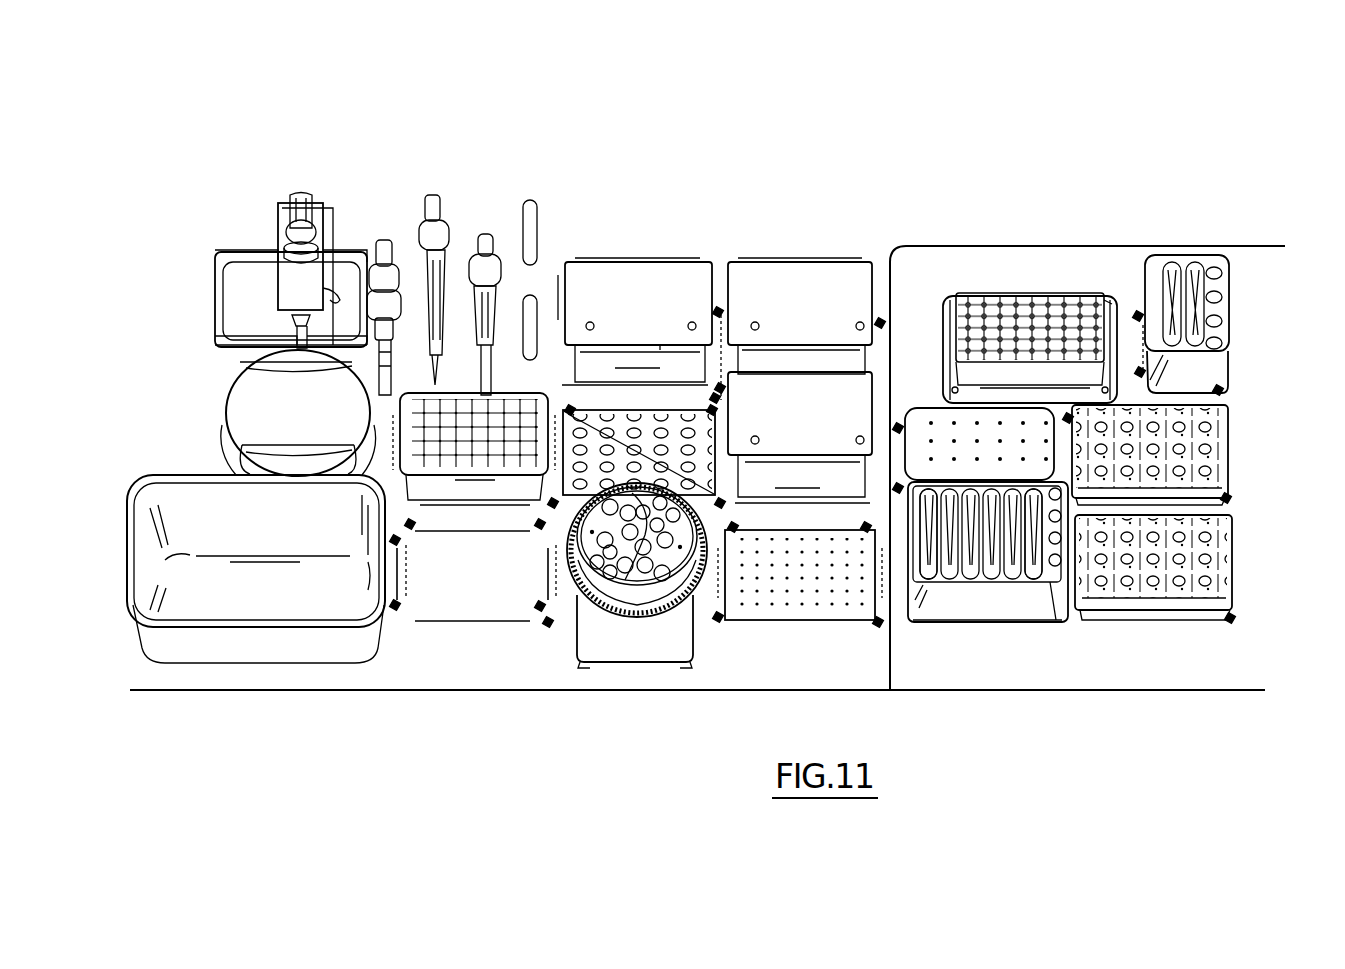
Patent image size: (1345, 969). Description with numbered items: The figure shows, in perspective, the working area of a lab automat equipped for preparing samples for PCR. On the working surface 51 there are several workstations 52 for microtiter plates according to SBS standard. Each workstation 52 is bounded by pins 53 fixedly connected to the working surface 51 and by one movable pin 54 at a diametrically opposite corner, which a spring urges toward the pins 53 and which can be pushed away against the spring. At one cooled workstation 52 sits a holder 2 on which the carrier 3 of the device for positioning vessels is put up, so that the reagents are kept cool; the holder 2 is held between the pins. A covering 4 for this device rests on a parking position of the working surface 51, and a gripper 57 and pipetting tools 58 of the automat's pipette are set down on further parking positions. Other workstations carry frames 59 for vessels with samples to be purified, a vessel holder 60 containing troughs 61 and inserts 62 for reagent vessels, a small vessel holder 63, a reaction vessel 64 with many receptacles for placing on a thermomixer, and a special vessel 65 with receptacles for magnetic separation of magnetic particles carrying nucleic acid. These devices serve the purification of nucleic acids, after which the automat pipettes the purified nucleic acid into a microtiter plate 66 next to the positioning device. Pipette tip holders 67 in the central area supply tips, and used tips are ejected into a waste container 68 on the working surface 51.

The holder 2 is at (630, 630).
The carrier 3 is at (688, 668).
The covering 4 is at (278, 398).
The working surface 51 is at (728, 202).
The workstation 52 is at (492, 600).
The pin 53 is at (415, 526).
The movable pin 54 is at (545, 630).
The gripper 57 is at (292, 205).
The pipetting tools 58 is at (383, 242).
The frames 59 is at (1215, 466).
The vessel holder 60 is at (1012, 610).
The troughs 61 is at (1170, 262).
The inserts 62 is at (1209, 262).
The small vessel holder 63 is at (1215, 362).
The reaction vessel 64 is at (1040, 296).
The special vessel 65 is at (930, 408).
The microtiter plate 66 is at (812, 622).
The pipette tip holders 67 is at (625, 258).
The waste container 68 is at (265, 652).